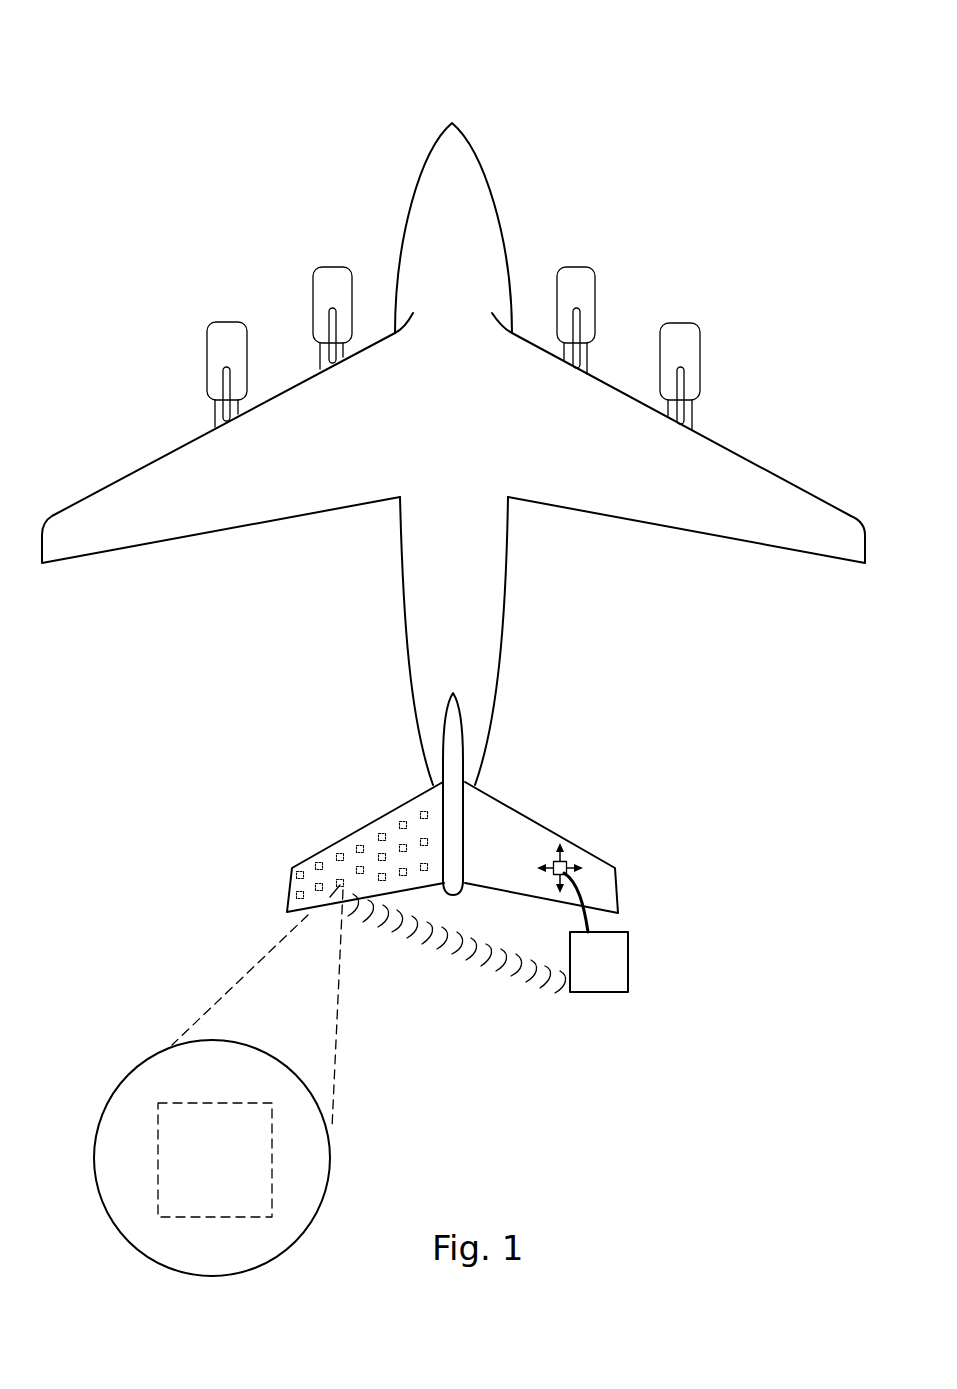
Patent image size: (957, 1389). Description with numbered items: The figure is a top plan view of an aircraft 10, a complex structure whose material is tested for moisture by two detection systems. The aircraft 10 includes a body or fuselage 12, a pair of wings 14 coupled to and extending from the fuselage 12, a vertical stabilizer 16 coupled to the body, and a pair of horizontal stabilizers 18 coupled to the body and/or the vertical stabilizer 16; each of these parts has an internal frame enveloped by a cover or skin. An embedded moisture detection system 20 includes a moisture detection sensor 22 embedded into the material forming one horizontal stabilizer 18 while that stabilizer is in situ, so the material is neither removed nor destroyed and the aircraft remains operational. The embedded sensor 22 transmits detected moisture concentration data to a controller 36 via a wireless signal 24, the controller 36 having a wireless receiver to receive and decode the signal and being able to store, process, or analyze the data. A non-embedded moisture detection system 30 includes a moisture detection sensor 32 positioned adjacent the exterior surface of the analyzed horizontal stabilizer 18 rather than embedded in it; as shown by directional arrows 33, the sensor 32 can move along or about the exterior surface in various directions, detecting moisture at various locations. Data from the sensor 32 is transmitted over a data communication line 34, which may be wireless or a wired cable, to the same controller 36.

The aircraft 10 is at (645, 86).
The fuselage 12 is at (493, 197).
The wings 14 is at (132, 490).
The vertical stabilizer 16 is at (457, 830).
The horizontal stabilizers 18 is at (365, 842).
The embedded moisture detection system 20 is at (220, 972).
The moisture detection sensor 22 is at (148, 1182).
The wireless signal 24 is at (451, 978).
The non-embedded moisture detection system 30 is at (638, 921).
The moisture detection sensor 32 is at (567, 862).
The directional arrows 33 is at (553, 863).
The data communication line 34 is at (590, 923).
The controller 36 is at (628, 951).